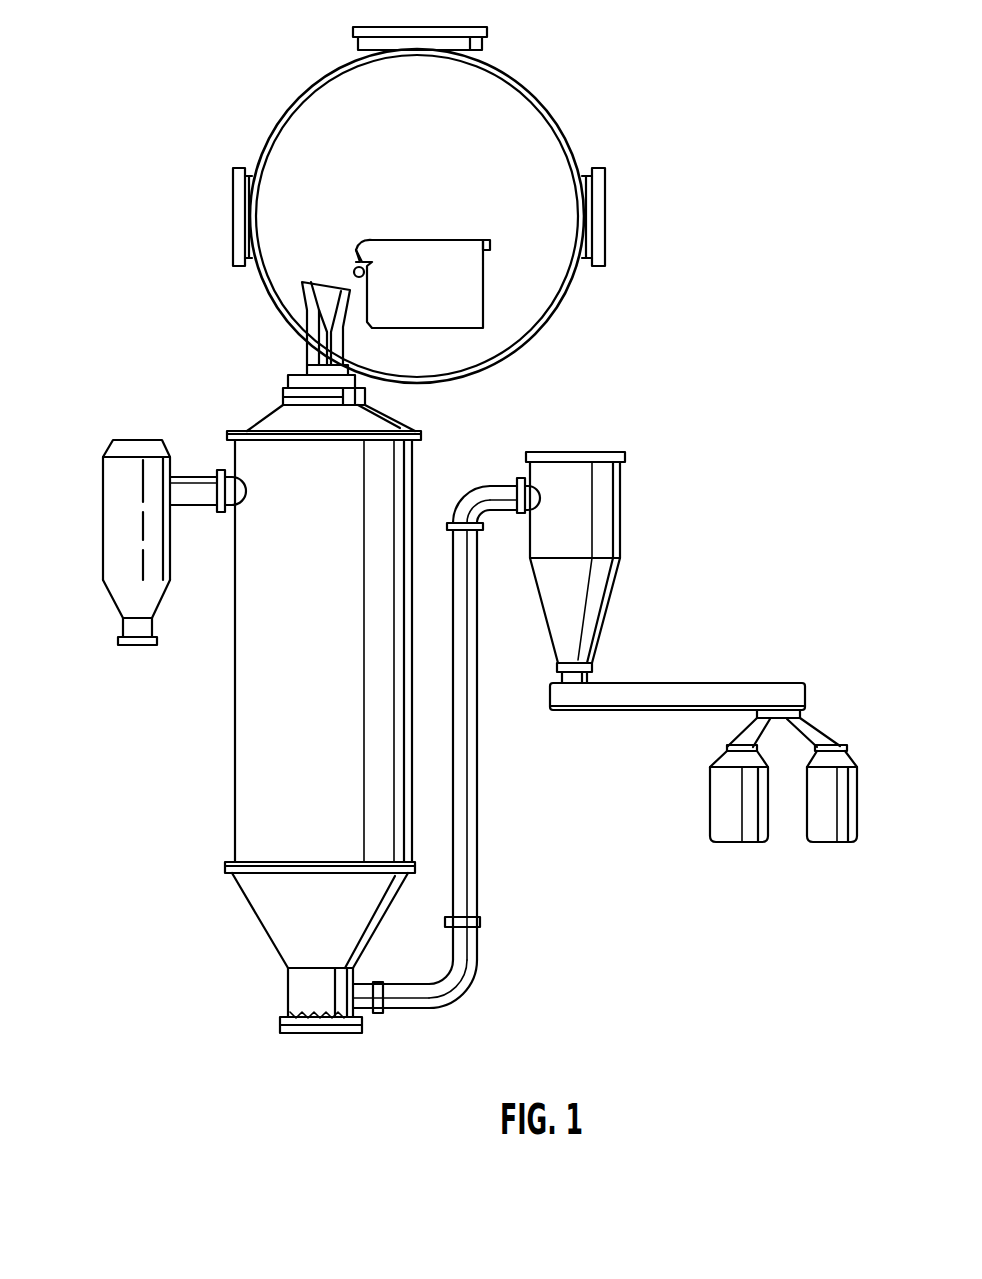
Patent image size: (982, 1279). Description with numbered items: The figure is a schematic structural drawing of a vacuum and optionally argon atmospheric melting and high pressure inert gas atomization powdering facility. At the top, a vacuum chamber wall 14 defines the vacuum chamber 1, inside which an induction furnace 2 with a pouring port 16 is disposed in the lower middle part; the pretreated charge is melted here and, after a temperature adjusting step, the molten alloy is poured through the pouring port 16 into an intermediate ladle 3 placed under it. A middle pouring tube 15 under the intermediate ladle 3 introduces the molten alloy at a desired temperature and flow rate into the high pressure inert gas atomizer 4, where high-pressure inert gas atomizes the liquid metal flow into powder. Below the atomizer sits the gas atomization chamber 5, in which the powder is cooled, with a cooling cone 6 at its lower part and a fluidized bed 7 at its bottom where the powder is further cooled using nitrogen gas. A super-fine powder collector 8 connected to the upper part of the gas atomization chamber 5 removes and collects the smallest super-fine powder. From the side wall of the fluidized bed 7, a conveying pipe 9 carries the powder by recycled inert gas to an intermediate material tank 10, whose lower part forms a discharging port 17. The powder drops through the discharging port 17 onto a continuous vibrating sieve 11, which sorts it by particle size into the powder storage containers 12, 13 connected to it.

The vacuum chamber 1 is at (297, 132).
The induction furnace 2 is at (466, 285).
The intermediate ladle 3 is at (323, 293).
The high pressure inert gas atomizer 4 is at (300, 369).
The gas atomization chamber 5 is at (286, 651).
The cooling cone 6 is at (268, 916).
The fluidized bed 7 is at (288, 1013).
The super-fine powder collector 8 is at (121, 510).
The conveying pipe 9 is at (471, 741).
The intermediate material tank 10 is at (584, 527).
The vibrating sieve 11 is at (685, 692).
The powder storage container 12 is at (726, 829).
The powder storage container 13 is at (822, 830).
The vacuum chamber wall 14 is at (535, 97).
The middle pouring tube 15 is at (316, 338).
The pouring port 16 is at (365, 252).
The discharging port 17 is at (589, 659).